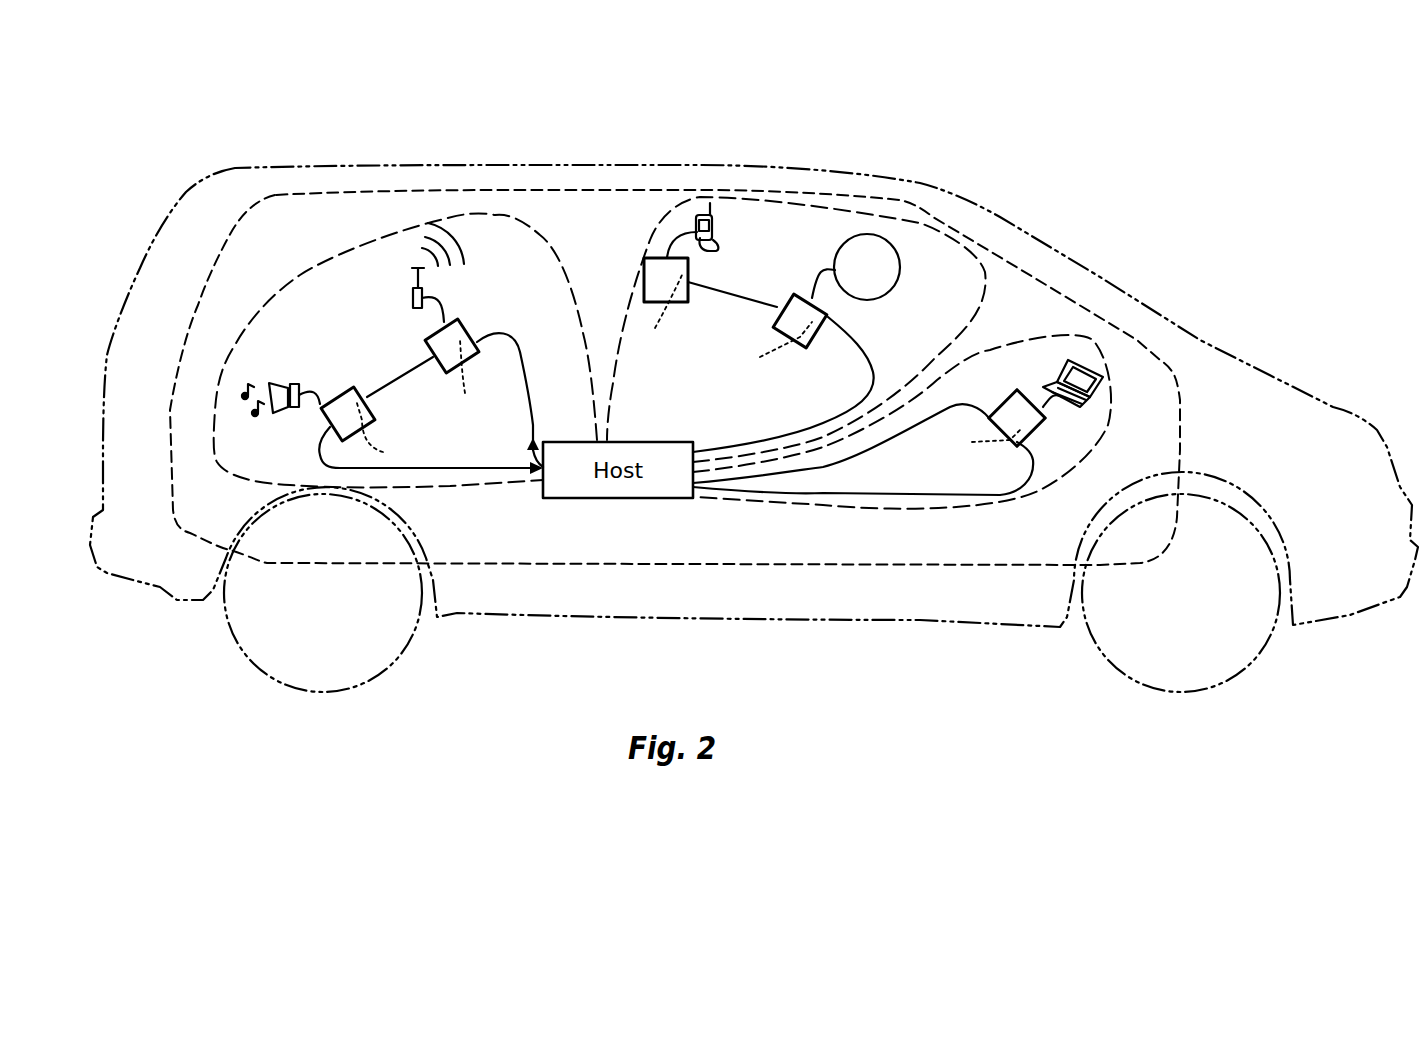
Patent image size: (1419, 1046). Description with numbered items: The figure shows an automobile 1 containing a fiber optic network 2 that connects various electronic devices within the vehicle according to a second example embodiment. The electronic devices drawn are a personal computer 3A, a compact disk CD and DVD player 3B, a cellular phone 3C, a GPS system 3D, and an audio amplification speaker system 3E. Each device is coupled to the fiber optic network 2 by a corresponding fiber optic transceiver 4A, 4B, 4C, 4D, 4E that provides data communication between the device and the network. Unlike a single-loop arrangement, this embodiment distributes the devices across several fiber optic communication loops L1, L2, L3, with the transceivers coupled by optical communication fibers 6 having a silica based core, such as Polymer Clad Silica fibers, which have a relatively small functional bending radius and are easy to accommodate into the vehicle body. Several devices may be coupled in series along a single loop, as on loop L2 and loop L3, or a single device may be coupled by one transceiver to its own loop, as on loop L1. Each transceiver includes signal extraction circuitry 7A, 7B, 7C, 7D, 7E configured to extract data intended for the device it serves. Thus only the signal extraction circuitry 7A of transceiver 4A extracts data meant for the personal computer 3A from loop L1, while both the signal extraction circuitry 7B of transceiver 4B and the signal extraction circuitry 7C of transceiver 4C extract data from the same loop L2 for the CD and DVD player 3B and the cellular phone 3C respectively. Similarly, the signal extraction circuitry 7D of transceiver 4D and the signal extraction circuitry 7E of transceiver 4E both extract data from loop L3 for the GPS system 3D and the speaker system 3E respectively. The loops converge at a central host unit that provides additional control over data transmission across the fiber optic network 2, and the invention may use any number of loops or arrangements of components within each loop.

The automobile 1 is at (1106, 272).
The fiber optic network 2 is at (1139, 336).
The personal computer 3A is at (1063, 367).
The CD and DVD player 3B is at (903, 262).
The cellular phone 3C is at (717, 228).
The GPS system 3D is at (423, 290).
The audio amplification speaker system 3E is at (270, 380).
The fiber optic transceiver 4A is at (1012, 400).
The fiber optic transceiver 4B is at (787, 297).
The fiber optic transceiver 4C is at (653, 257).
The fiber optic transceiver 4D is at (458, 320).
The fiber optic transceiver 4E is at (352, 385).
The optical communication fibers 6 is at (393, 380).
The signal extraction circuitry 7A is at (983, 443).
The signal extraction circuitry 7B is at (770, 347).
The signal extraction circuitry 7C is at (654, 313).
The signal extraction circuitry 7D is at (469, 379).
The signal extraction circuitry 7E is at (384, 433).
The fiber optic communication loop L1 is at (948, 512).
The fiber optic communication loop L2 is at (996, 308).
The fiber optic communication loop L3 is at (326, 256).